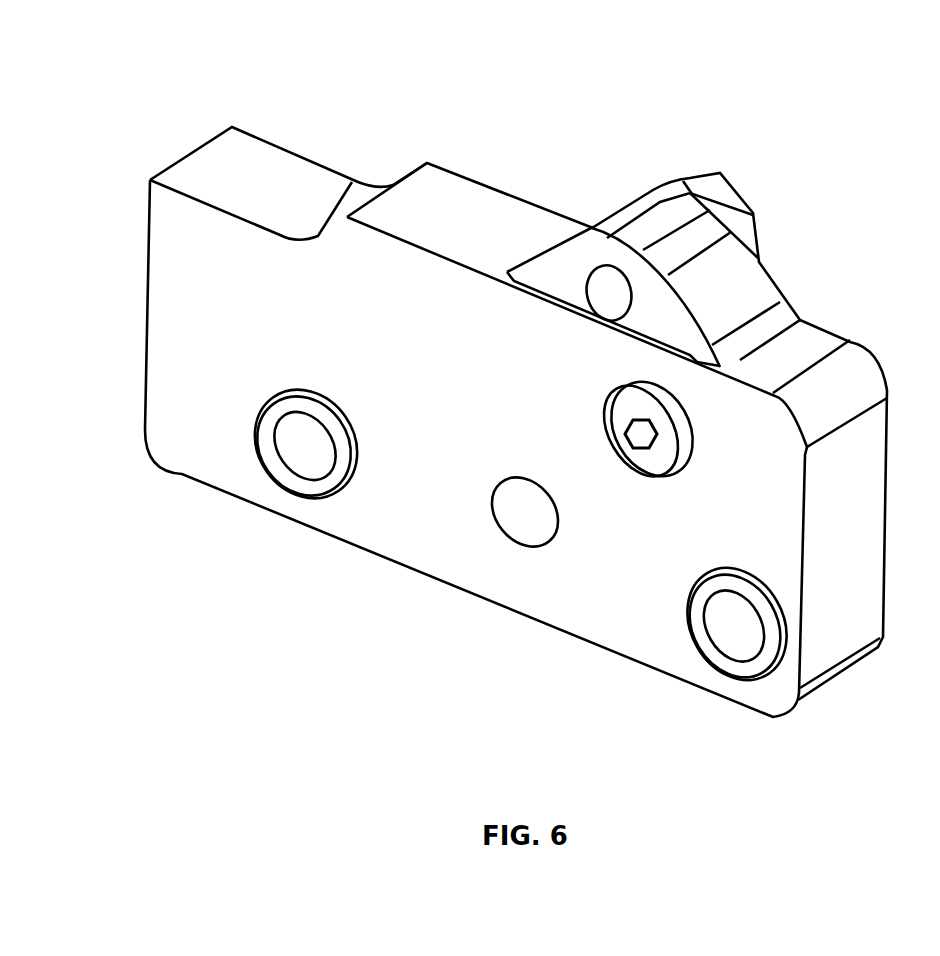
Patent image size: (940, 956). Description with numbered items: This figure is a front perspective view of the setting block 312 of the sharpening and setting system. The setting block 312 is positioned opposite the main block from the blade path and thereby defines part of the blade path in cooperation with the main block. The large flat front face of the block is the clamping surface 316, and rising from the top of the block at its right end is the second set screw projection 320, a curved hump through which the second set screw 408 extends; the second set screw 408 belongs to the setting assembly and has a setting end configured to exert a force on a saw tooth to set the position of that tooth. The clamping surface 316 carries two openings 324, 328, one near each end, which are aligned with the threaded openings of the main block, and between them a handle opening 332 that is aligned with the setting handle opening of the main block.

The setting block 312 is at (688, 98).
The clamping surface 316 is at (443, 453).
The second set screw projection 320 is at (752, 273).
The opening 324 is at (305, 443).
The opening 328 is at (737, 627).
The handle opening 332 is at (525, 518).
The second set screw 408 is at (605, 285).